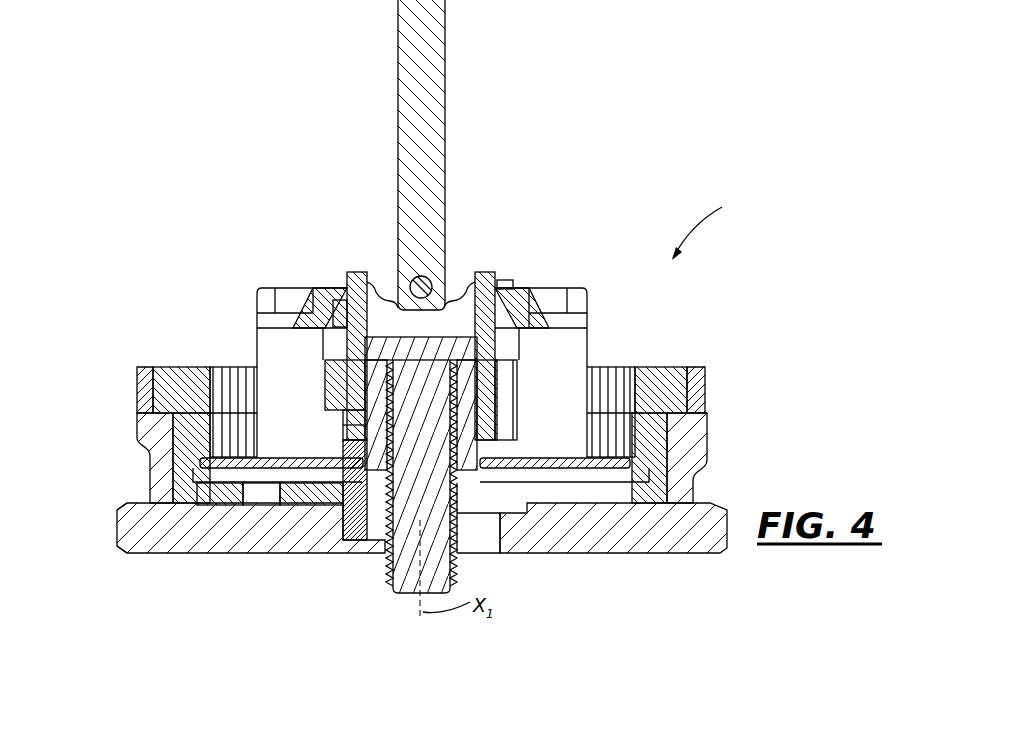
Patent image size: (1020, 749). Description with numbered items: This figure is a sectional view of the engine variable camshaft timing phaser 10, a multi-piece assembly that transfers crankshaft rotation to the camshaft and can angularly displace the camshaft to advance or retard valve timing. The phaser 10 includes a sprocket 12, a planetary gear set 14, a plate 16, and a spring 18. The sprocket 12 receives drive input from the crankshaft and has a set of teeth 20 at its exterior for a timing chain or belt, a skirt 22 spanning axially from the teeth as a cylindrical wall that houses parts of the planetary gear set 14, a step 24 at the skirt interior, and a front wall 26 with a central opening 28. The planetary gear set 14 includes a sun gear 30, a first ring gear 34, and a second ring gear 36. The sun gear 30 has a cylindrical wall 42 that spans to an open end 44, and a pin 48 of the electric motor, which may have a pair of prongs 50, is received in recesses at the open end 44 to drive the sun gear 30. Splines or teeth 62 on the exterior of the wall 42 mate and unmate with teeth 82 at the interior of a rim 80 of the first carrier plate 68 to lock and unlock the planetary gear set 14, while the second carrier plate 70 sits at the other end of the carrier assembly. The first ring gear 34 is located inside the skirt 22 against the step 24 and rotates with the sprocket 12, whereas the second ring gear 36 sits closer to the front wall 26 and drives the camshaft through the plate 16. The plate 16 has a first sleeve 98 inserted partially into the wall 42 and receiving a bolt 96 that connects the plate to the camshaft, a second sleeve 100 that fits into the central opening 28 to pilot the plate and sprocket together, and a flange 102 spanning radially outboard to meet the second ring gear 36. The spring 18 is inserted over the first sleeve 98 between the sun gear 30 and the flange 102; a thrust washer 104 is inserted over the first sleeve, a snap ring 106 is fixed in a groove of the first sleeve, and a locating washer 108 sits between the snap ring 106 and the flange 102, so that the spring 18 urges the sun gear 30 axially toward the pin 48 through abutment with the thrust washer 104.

The phaser 10 is at (709, 223).
The sprocket 12 is at (163, 552).
The planetary gear set 14 is at (218, 364).
The plate 16 is at (290, 516).
The spring 18 is at (485, 418).
The set of teeth 20 is at (125, 523).
The skirt 22 is at (152, 473).
The step 24 is at (137, 424).
The front wall 26 is at (650, 541).
The central opening 28 is at (332, 542).
The sun gear 30 is at (489, 278).
The first ring gear 34 is at (665, 367).
The second ring gear 36 is at (680, 448).
The wall 42 is at (357, 272).
The open end 44 is at (480, 272).
The pin 48 is at (445, 147).
The prongs 50 is at (416, 279).
The teeth 62 is at (348, 324).
The first carrier plate 68 is at (540, 312).
The second carrier plate 70 is at (592, 410).
The rim 80 is at (532, 286).
The teeth 82 is at (336, 284).
The bolt 96 is at (446, 523).
The first sleeve 98 is at (360, 391).
The second sleeve 100 is at (515, 546).
The flange 102 is at (212, 504).
The thrust washer 104 is at (350, 440).
The snap ring 106 is at (493, 458).
The locating washer 108 is at (345, 458).